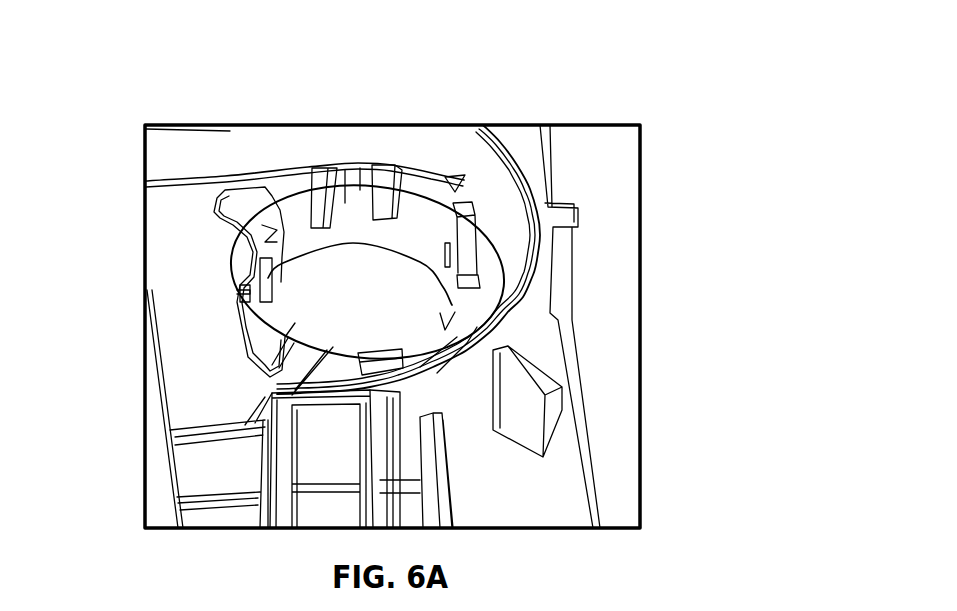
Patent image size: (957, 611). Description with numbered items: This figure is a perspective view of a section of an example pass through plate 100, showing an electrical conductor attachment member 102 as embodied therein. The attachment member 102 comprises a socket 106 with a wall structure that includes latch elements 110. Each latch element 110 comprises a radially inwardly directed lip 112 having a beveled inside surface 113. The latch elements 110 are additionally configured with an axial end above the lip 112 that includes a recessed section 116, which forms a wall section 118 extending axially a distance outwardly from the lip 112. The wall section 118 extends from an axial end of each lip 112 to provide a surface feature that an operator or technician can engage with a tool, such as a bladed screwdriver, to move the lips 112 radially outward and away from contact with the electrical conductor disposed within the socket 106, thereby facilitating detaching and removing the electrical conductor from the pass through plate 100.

The pass through plate 100 is at (670, 93).
The attachment member 102 is at (373, 326).
The socket 106 is at (428, 172).
The latch element 110 is at (345, 202).
The lip 112 is at (370, 352).
The beveled inside surface 113 is at (465, 292).
The recessed section 116 is at (378, 160).
The wall section 118 is at (360, 166).